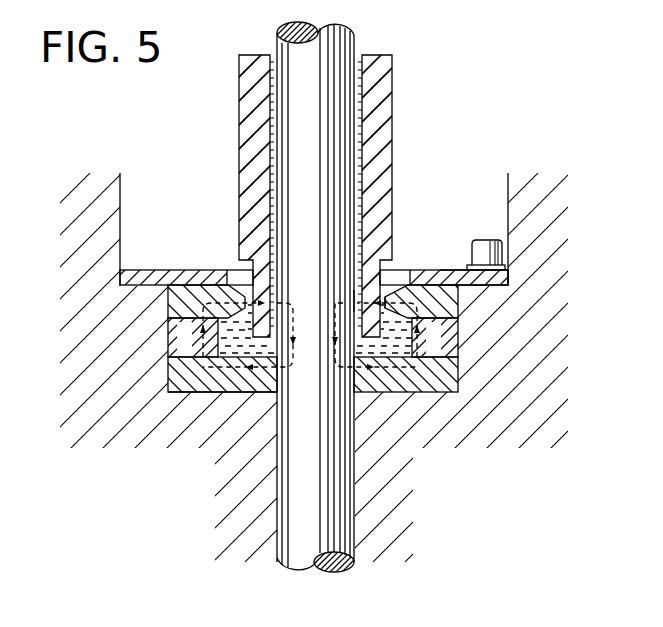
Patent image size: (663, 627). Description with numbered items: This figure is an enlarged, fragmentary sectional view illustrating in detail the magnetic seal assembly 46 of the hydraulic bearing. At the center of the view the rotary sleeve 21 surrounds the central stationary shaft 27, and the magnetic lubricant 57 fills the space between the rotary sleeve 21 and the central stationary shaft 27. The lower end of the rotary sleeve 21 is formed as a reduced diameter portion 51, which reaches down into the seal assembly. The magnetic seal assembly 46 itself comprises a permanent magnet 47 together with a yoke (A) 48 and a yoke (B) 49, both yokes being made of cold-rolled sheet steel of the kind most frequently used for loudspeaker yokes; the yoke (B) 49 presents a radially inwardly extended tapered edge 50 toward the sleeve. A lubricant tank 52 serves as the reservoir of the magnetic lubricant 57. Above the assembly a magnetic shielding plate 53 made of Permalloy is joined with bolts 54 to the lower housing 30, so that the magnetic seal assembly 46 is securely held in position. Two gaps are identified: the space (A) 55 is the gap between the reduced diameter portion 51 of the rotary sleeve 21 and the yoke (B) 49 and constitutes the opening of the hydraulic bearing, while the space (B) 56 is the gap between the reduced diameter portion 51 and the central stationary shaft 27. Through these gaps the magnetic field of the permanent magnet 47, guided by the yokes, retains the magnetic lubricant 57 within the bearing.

The rotary sleeve 21 is at (246, 100).
The central stationary shaft 27 is at (338, 521).
The lower housing 30 is at (510, 430).
The magnetic seal assembly 46 is at (170, 400).
The permanent magnet 47 is at (447, 335).
The yoke (A) 48 is at (432, 377).
The yoke (B) 49 is at (447, 303).
The radially inwardly extended tapered edge 50 is at (421, 284).
The reduced diameter portion 51 is at (258, 268).
The lubricant tank 52 is at (238, 347).
The magnetic shielding plate 53 is at (450, 278).
The bolts 54 is at (502, 250).
The space (A) 55 is at (383, 302).
The space (B) 56 is at (356, 300).
The magnetic lubricant 57 is at (360, 98).